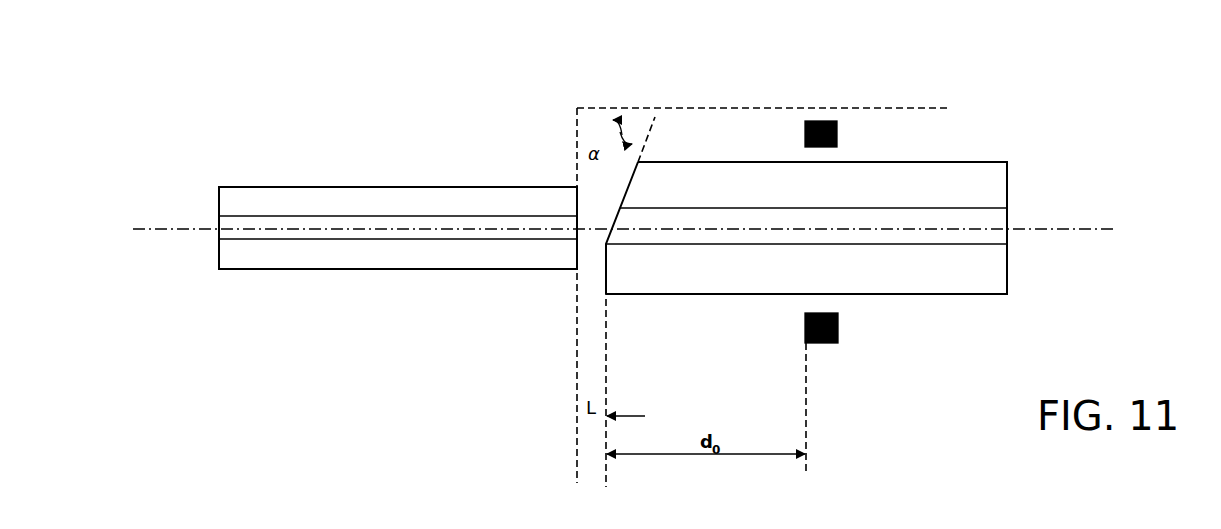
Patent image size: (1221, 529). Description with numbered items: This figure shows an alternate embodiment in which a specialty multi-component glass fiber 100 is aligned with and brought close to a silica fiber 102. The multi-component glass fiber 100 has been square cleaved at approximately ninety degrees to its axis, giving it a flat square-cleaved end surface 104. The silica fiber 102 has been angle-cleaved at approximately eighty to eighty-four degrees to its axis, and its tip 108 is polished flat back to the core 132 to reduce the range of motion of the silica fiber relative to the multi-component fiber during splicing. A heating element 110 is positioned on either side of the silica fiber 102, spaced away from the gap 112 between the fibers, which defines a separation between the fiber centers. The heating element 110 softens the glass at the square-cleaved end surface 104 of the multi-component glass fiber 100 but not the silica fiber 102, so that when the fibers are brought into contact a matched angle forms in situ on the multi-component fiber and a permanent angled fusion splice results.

The multi-component glass fiber 100 is at (320, 187).
The silica fiber 102 is at (740, 162).
The square-cleaved end surface 104 is at (576, 237).
The tip 108 is at (607, 265).
The heating element 110 is at (838, 328).
The gap 112 is at (576, 416).
The core 132 is at (660, 229).